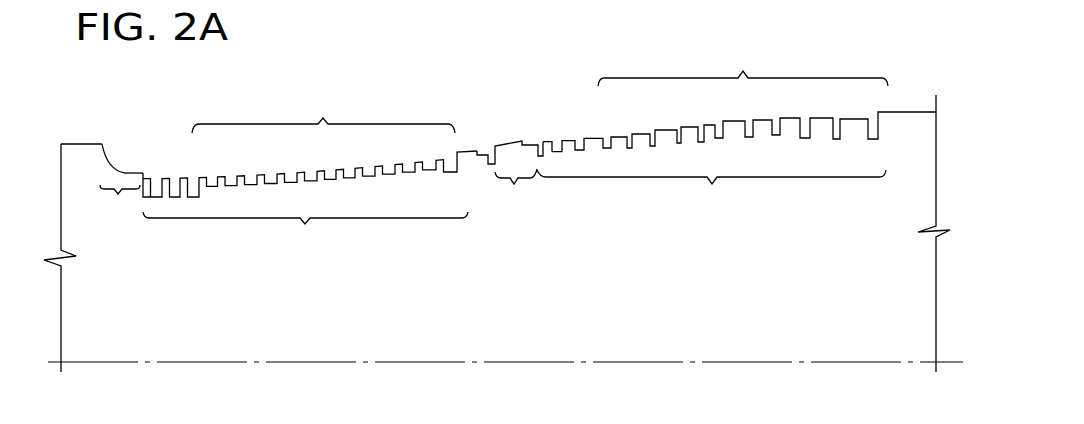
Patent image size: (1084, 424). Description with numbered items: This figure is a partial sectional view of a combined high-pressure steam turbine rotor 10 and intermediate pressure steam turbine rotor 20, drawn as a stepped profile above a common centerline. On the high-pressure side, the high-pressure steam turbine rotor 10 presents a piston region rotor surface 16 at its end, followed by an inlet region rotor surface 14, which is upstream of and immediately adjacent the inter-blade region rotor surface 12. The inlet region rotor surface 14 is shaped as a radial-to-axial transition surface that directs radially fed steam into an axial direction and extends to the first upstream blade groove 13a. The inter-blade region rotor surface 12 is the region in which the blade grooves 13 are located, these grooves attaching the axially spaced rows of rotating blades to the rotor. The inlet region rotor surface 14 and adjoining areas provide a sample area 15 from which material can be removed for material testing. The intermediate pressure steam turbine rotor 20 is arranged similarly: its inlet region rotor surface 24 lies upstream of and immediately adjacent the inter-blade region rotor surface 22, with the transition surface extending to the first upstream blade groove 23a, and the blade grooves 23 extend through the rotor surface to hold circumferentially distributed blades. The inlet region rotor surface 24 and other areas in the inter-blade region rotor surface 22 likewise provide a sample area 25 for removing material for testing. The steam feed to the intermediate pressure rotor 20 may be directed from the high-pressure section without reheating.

The high-pressure steam turbine rotor 10 is at (150, 301).
The intermediate pressure steam turbine rotor 20 is at (862, 283).
The inter-blade region rotor surface 12 is at (305, 234).
The blade grooves 13 is at (310, 144).
The first upstream blade groove 13a is at (165, 151).
The inlet region rotor surface 14 is at (105, 153).
The sample area 15 is at (121, 200).
The piston region rotor surface 16 is at (63, 143).
The inter-blade region rotor surface 22 is at (711, 192).
The blade grooves 23 is at (744, 97).
The first upstream blade groove 23a is at (543, 147).
The inlet region rotor surface 24 is at (513, 138).
The sample area 25 is at (516, 193).